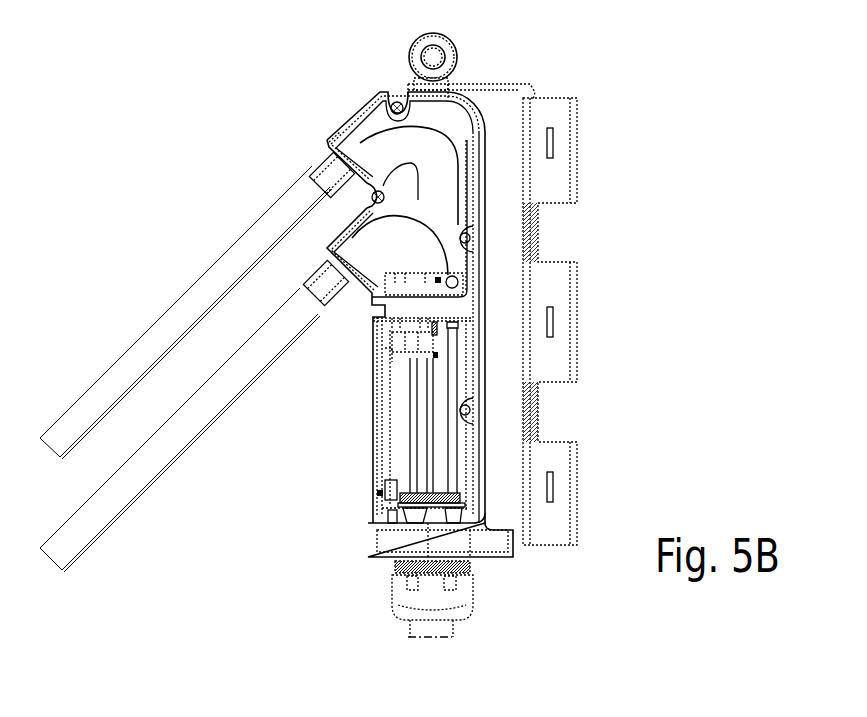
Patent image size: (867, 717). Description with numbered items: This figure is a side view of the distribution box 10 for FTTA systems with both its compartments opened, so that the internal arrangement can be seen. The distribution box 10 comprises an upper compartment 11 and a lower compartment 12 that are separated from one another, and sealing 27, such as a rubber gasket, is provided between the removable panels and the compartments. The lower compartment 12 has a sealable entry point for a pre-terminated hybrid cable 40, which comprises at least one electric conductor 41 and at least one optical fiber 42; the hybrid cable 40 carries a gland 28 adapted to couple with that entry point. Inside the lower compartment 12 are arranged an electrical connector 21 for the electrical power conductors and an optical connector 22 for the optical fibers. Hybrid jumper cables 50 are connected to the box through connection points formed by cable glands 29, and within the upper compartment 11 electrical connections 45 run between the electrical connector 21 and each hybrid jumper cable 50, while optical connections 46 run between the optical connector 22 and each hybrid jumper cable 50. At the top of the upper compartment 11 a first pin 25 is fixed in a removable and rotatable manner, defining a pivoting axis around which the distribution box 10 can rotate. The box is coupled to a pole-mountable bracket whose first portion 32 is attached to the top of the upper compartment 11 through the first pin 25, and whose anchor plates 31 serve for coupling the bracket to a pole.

The distribution box 10 is at (478, 46).
The upper compartment 11 is at (500, 146).
The lower compartment 12 is at (500, 518).
The electrical connector 21 is at (418, 353).
The optical connector 22 is at (462, 327).
The first pin 25 is at (445, 73).
The sealing 27 is at (376, 93).
The gland 28 is at (467, 598).
The cable gland 29 is at (313, 172).
The anchor plate 31 is at (570, 172).
The first portion 32 is at (513, 84).
The hybrid cable 40 is at (445, 632).
The electric conductor 41 is at (433, 447).
The optical fiber 42 is at (453, 478).
The electrical connection 45 is at (397, 259).
The optical connection 46 is at (445, 138).
The hybrid jumper cable 50 is at (108, 388).